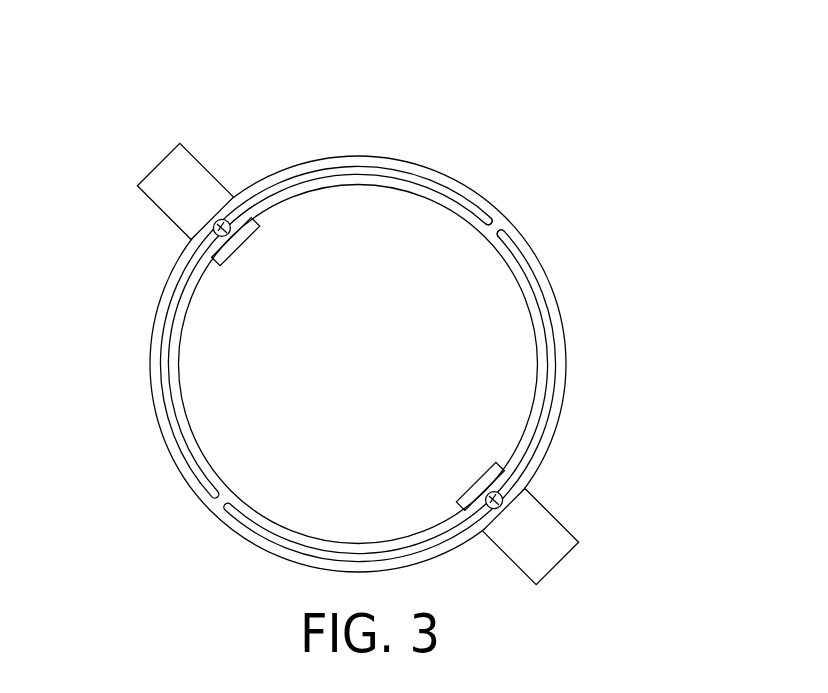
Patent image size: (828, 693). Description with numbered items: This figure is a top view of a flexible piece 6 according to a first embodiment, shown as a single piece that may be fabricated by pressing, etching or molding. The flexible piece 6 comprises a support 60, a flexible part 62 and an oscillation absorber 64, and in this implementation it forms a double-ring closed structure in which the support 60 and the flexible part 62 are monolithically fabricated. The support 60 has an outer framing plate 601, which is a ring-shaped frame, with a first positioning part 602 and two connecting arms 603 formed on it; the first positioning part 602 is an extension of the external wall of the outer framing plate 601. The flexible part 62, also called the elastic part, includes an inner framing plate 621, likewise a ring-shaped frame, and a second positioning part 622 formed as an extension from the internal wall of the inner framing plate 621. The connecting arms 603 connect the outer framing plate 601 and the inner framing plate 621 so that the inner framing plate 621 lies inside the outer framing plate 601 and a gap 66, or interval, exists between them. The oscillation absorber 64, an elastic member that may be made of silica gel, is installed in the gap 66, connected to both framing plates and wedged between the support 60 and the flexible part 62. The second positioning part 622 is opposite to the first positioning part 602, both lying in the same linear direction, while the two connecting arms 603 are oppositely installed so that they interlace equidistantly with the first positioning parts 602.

The flexible piece 6 is at (357, 309).
The support 60 is at (357, 309).
The outer framing plate 601 is at (343, 157).
The first positioning part 602 is at (450, 84).
The connecting arms 603 is at (497, 226).
The flexible part 62 is at (358, 364).
The inner framing plate 621 is at (527, 292).
The second positioning part 622 is at (478, 483).
The oscillation absorber 64 is at (212, 228).
The gap 66 is at (163, 324).